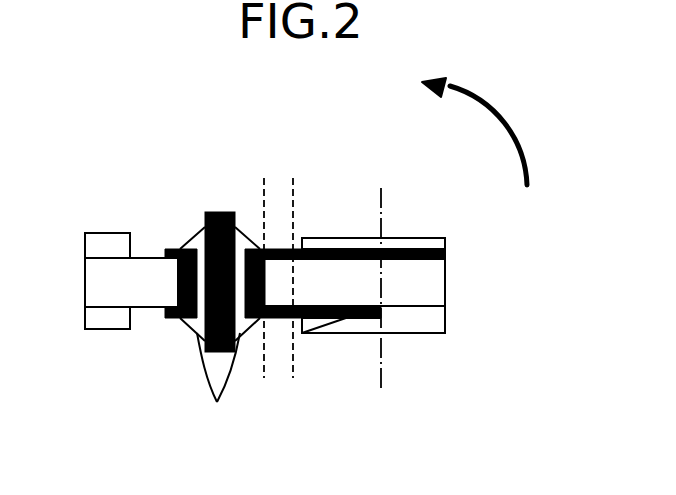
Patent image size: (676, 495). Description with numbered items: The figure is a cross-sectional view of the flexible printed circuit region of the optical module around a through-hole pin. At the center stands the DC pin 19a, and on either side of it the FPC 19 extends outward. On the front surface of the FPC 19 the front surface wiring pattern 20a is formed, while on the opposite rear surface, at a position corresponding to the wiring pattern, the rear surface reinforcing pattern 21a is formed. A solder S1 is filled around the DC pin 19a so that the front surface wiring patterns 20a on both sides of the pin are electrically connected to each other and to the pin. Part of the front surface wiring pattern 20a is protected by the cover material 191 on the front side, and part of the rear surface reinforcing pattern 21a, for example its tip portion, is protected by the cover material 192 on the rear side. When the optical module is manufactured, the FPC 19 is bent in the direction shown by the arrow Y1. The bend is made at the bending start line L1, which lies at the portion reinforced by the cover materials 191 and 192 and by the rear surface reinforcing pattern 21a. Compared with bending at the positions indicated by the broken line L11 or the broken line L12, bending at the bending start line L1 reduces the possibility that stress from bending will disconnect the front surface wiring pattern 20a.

The FPC 19 is at (92, 282).
The cover material 191 is at (106, 240).
The cover material 192 is at (106, 325).
The DC pin 19a is at (215, 212).
The front surface wiring pattern 20a is at (175, 249).
The rear surface reinforcing pattern 21a is at (170, 320).
The solder S1 is at (218, 384).
The bending start line L1 is at (381, 190).
The broken line L11 is at (264, 378).
The broken line L12 is at (293, 378).
The arrow Y1 is at (518, 128).